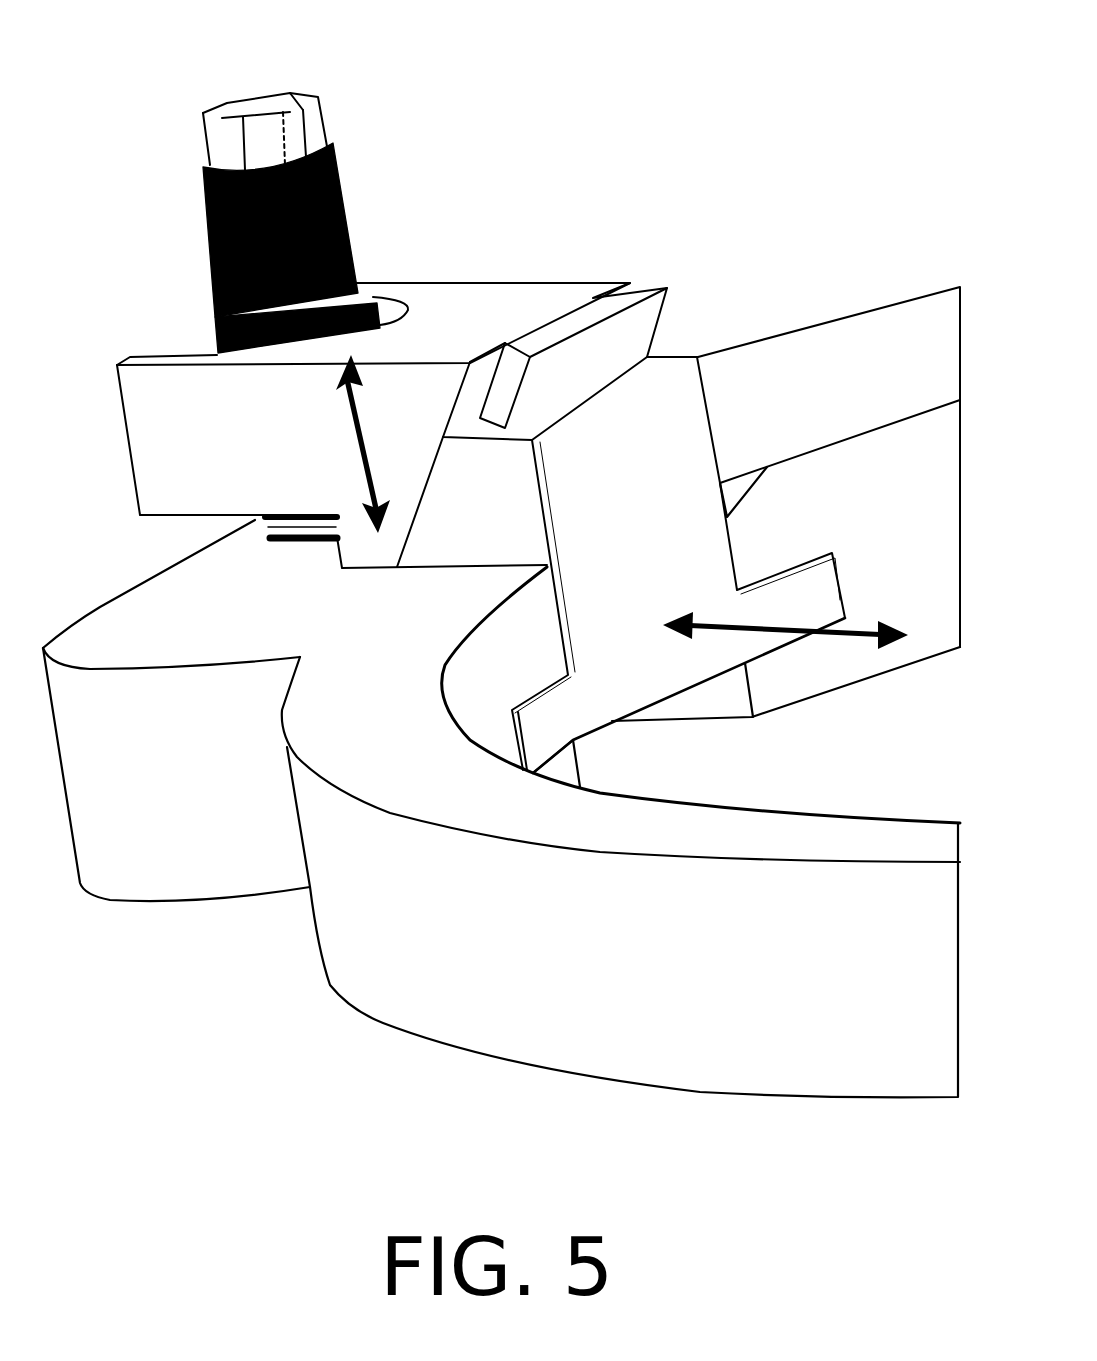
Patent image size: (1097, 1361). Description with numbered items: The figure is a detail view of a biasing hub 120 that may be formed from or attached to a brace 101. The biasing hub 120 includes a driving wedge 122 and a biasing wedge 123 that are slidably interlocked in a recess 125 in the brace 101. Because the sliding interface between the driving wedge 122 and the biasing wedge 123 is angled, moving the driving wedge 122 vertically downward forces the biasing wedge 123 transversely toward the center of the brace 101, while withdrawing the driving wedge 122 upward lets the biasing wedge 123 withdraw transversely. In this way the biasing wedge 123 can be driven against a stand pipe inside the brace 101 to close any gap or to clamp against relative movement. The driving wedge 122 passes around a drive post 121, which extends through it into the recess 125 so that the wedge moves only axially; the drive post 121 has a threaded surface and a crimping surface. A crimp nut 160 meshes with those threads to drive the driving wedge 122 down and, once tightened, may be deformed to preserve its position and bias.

The brace 101 is at (410, 925).
The biasing hub 120 is at (526, 403).
The drive post 121 is at (243, 105).
The driving wedge 122 is at (487, 307).
The biasing wedge 123 is at (657, 653).
The recess 125 is at (760, 467).
The crimp nut 160 is at (220, 268).